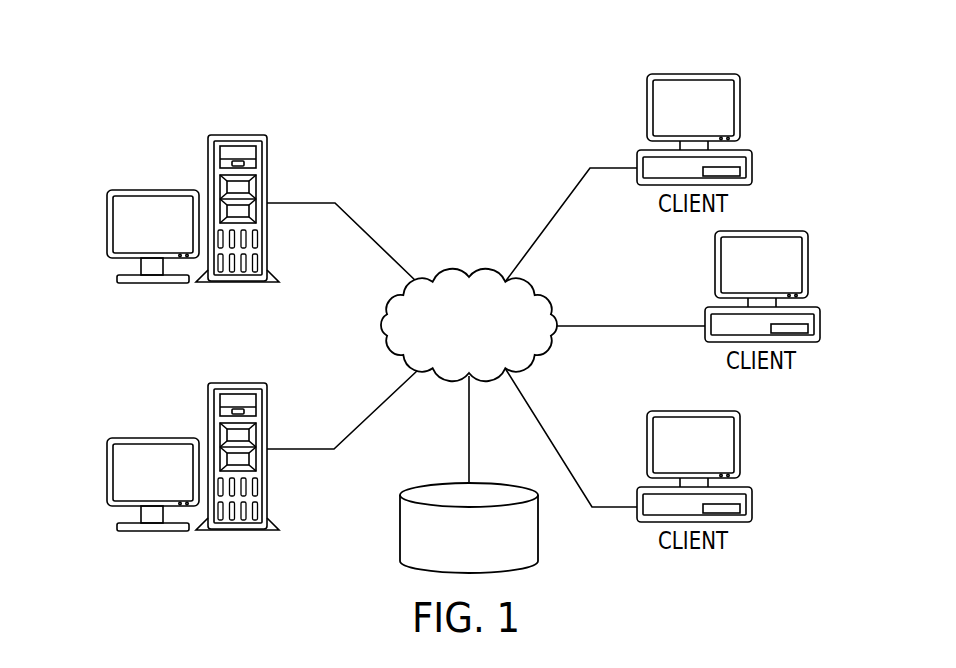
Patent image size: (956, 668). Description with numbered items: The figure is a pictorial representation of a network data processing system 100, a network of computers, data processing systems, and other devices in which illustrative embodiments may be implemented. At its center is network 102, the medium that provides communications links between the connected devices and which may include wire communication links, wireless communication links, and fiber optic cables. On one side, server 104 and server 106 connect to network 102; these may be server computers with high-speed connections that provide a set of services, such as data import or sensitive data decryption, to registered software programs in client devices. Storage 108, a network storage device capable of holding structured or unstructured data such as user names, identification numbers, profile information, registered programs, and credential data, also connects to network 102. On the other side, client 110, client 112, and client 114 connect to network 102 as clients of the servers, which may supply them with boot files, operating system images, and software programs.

The network data processing system 100 is at (357, 64).
The network 102 is at (441, 276).
The server 104 is at (107, 225).
The server 106 is at (107, 470).
The storage 108 is at (400, 529).
The client 110 is at (753, 160).
The client 112 is at (820, 333).
The client 114 is at (753, 514).